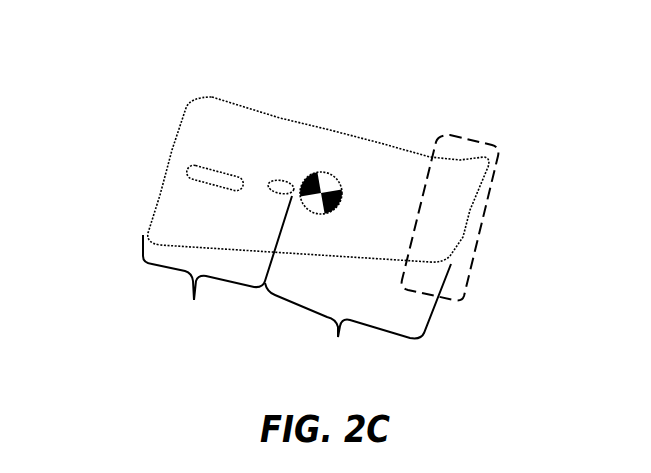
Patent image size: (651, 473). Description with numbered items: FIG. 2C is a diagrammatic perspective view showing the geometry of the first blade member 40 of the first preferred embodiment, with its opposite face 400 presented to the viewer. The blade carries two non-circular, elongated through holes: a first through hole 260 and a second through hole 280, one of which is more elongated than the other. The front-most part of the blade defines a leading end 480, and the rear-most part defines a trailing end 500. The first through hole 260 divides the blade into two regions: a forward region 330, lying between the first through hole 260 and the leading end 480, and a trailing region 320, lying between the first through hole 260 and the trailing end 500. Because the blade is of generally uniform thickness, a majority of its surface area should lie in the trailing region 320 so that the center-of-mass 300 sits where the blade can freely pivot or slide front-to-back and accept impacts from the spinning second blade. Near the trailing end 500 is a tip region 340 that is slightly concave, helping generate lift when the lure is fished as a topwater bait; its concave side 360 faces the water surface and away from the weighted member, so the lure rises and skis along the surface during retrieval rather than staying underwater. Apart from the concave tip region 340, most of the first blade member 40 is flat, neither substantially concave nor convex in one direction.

The first blade member 40 is at (199, 55).
The opposite face 400 is at (186, 122).
The leading end 480 is at (167, 161).
The second through hole 280 is at (200, 175).
The first through hole 260 is at (284, 185).
The center-of-mass 300 is at (328, 182).
The tip region 340 is at (470, 140).
The concave side 360 is at (458, 183).
The trailing end 500 is at (468, 207).
The forward region 330 is at (217, 263).
The trailing region 320 is at (358, 316).